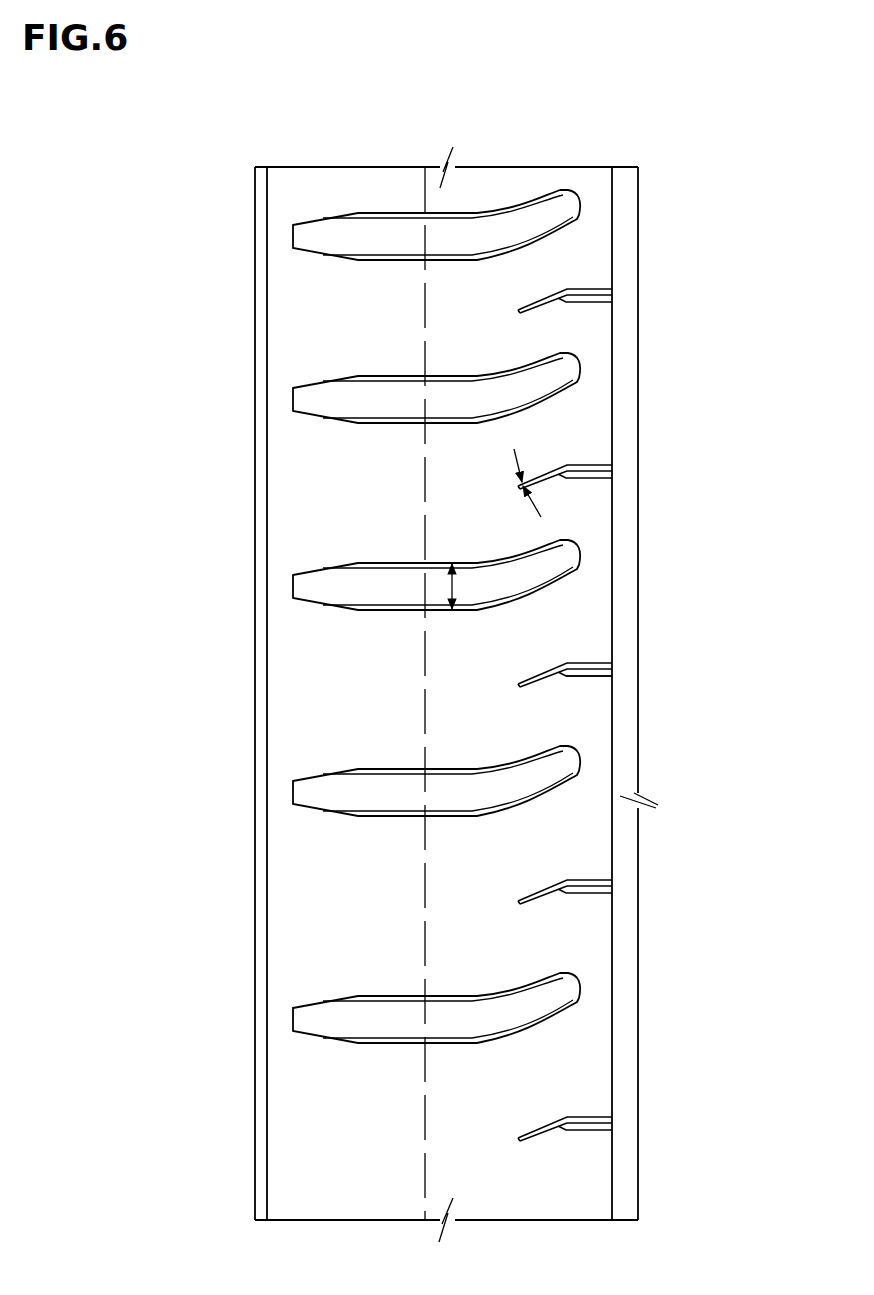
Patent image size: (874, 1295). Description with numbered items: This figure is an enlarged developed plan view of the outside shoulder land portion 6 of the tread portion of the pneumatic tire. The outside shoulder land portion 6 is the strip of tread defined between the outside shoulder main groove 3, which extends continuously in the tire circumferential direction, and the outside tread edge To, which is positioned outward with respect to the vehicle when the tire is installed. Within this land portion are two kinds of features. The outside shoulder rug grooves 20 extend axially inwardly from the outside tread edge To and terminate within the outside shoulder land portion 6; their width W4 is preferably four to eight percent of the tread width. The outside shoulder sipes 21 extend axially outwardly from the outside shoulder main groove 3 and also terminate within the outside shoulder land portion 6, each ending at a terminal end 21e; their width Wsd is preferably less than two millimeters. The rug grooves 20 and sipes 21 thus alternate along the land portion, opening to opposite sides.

The outside shoulder main groove 3 is at (623, 207).
The outside shoulder land portion 6 is at (483, 207).
The outside shoulder rug groove 20 is at (537, 572).
The outside shoulder sipe 21 is at (588, 465).
The sipe end portion 21e is at (592, 672).
The outside tread edge To is at (427, 325).
The width of the outside shoulder sipe Wsd is at (522, 483).
The width of the outside shoulder rug groove W4 is at (452, 586).